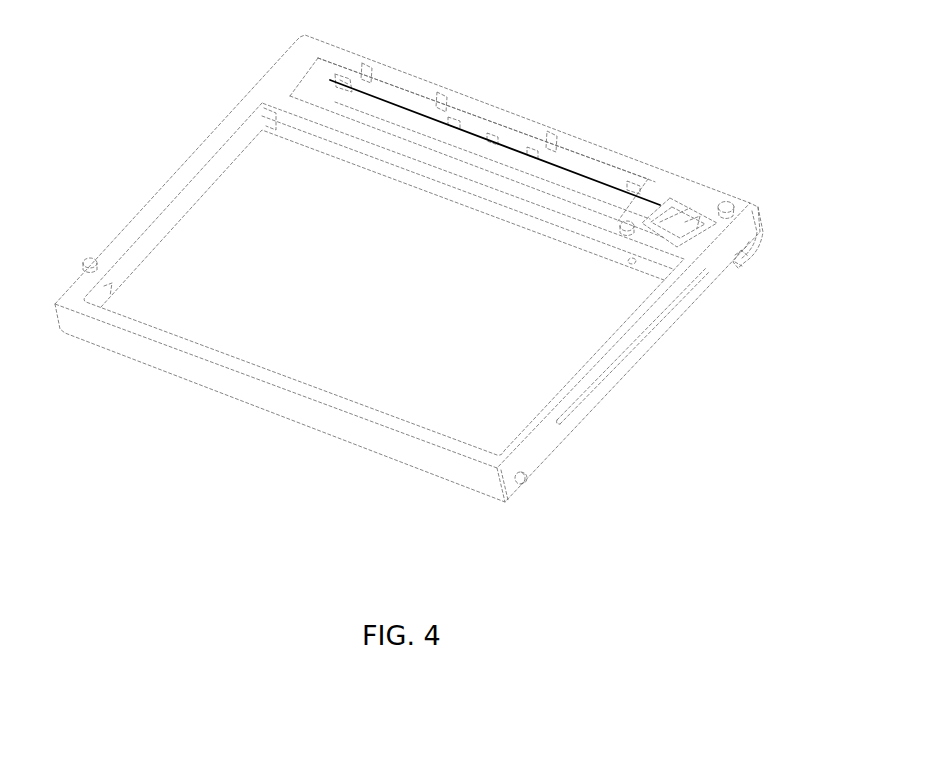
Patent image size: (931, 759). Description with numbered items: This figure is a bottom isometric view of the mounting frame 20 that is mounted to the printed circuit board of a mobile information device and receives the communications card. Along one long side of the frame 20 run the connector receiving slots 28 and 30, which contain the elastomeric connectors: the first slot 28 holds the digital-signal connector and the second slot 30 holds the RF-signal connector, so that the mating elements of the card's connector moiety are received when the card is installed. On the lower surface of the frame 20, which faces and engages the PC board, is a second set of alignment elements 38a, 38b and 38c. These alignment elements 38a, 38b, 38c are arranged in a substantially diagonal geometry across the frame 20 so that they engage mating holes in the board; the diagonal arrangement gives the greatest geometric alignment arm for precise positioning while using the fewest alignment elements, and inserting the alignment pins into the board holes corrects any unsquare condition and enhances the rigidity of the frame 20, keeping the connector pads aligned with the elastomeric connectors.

The mounting frame 20 is at (170, 175).
The connector receiving slot 28 is at (323, 103).
The connector receiving slot 30 is at (677, 227).
The alignment element 38a is at (730, 201).
The alignment element 38b is at (624, 223).
The alignment element 38c is at (84, 261).